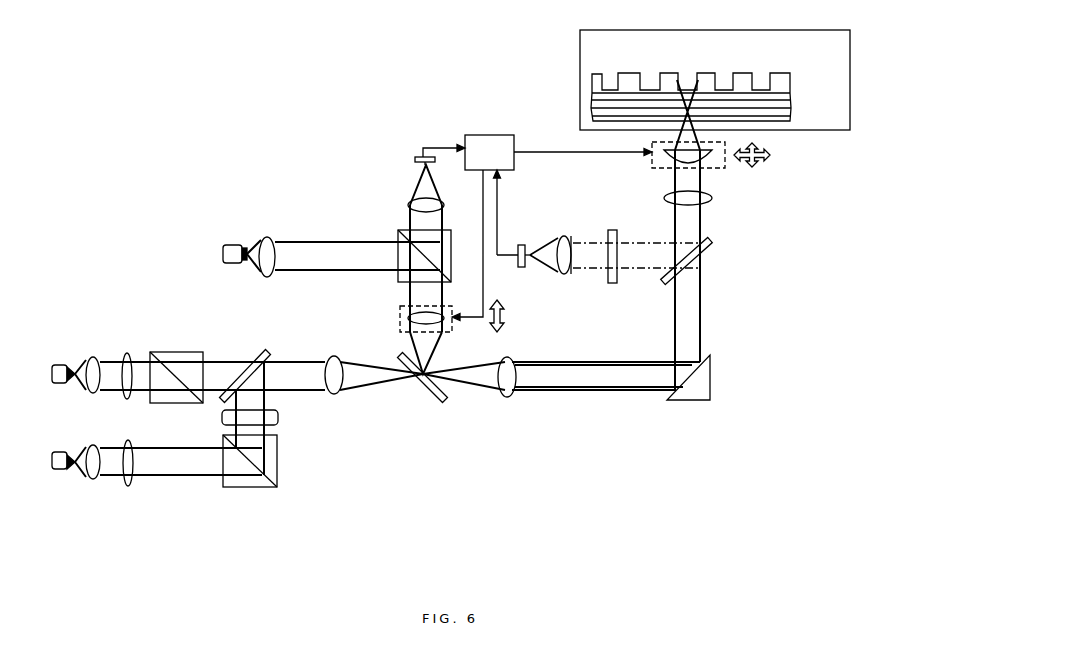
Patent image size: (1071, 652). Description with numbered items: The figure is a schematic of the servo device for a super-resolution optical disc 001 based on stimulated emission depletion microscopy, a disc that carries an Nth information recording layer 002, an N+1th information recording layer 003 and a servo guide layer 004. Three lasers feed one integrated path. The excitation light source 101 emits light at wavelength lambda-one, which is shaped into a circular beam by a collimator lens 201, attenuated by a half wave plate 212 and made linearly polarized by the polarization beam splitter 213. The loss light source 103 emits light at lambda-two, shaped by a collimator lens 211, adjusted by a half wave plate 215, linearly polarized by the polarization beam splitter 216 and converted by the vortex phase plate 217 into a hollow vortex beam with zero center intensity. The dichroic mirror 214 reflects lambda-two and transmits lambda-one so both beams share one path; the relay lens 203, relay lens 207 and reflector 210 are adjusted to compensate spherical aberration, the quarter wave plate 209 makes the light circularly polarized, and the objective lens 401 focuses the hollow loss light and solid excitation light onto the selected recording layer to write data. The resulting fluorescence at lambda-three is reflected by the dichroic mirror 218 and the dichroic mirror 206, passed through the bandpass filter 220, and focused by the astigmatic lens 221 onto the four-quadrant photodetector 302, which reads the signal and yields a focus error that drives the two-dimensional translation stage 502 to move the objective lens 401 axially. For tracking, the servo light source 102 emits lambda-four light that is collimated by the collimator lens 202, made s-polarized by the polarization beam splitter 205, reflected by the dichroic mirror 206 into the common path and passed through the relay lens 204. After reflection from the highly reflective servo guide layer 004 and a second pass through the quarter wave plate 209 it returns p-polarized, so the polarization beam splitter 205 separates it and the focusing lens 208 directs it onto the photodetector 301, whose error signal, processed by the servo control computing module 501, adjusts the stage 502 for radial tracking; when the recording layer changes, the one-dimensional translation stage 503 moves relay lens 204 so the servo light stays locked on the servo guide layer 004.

The super-resolution optical disc 001 is at (852, 92).
The Nth information recording layer 002 is at (790, 117).
The N+1th information recording layer 003 is at (788, 102).
The servo guide layer 004 is at (782, 73).
The excitation light source 101 is at (56, 366).
The servo light source 102 is at (226, 248).
The loss light source 103 is at (64, 463).
The collimator lens 201 is at (88, 358).
The collimator lens 202 is at (262, 240).
The relay lens 203 is at (334, 394).
The relay lens 204 is at (406, 316).
The polarization beam splitter 205 is at (400, 236).
The dichroic mirror 206 is at (430, 397).
The relay lens 207 is at (505, 398).
The focusing lens 208 is at (409, 205).
The ¼ wave plate 209 is at (668, 200).
The reflector 210 is at (695, 400).
The collimator lens 211 is at (91, 476).
The ½ wave plate 212 is at (125, 355).
The polarization beam splitter 213 is at (178, 352).
The dichroic mirror 214 is at (250, 356).
The ½ wave plate 215 is at (128, 483).
The polarization beam splitter 216 is at (250, 489).
The vortex phase plate 217 is at (279, 424).
The dichroic mirror 218 is at (708, 242).
The filter 220 is at (615, 284).
The astigmatic lens 221 is at (567, 278).
The photodetector 301 is at (414, 160).
The photodetector 302 is at (522, 268).
The objective lens 401 is at (668, 158).
The servo control computing module 501 is at (489, 152).
The two-dimensional translation stage 502 is at (652, 165).
The one-dimensional translation stage 503 is at (400, 330).